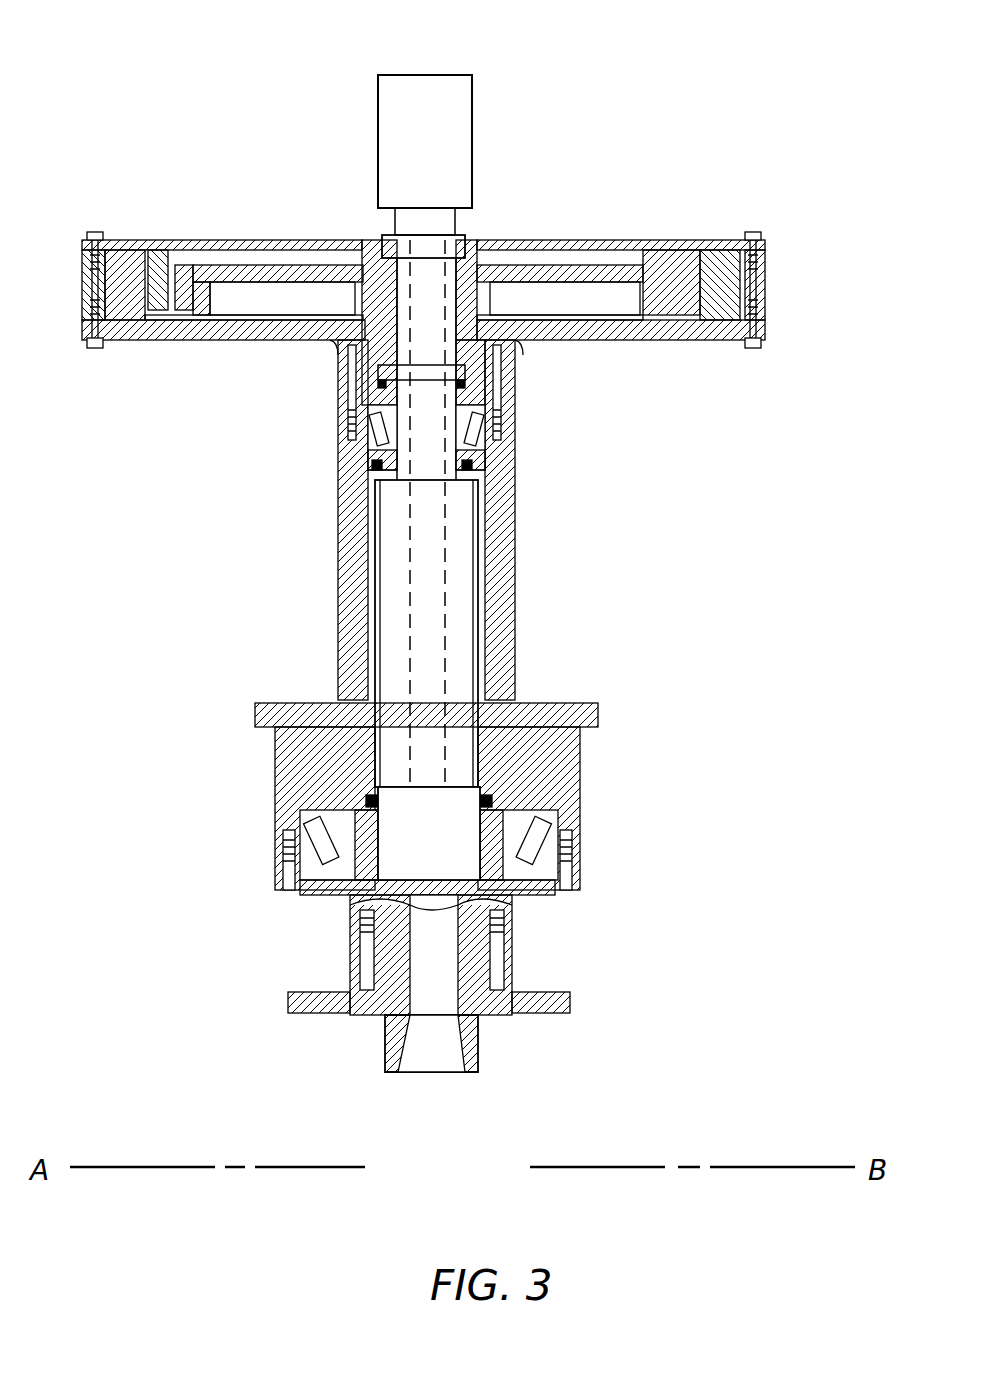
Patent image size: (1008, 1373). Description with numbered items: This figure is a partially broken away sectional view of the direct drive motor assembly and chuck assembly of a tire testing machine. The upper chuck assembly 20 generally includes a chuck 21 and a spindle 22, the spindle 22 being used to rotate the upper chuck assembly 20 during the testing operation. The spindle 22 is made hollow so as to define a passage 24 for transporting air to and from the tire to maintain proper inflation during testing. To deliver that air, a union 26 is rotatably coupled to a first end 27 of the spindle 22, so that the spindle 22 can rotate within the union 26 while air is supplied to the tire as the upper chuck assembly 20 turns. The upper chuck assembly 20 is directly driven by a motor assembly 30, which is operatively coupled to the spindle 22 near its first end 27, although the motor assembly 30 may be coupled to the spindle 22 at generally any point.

The upper chuck assembly 20 is at (315, 559).
The chuck 21 is at (385, 1050).
The spindle 22 is at (460, 568).
The passage 24 is at (430, 235).
The union 26 is at (425, 88).
The first end 27 is at (380, 245).
The motor assembly 30 is at (250, 226).